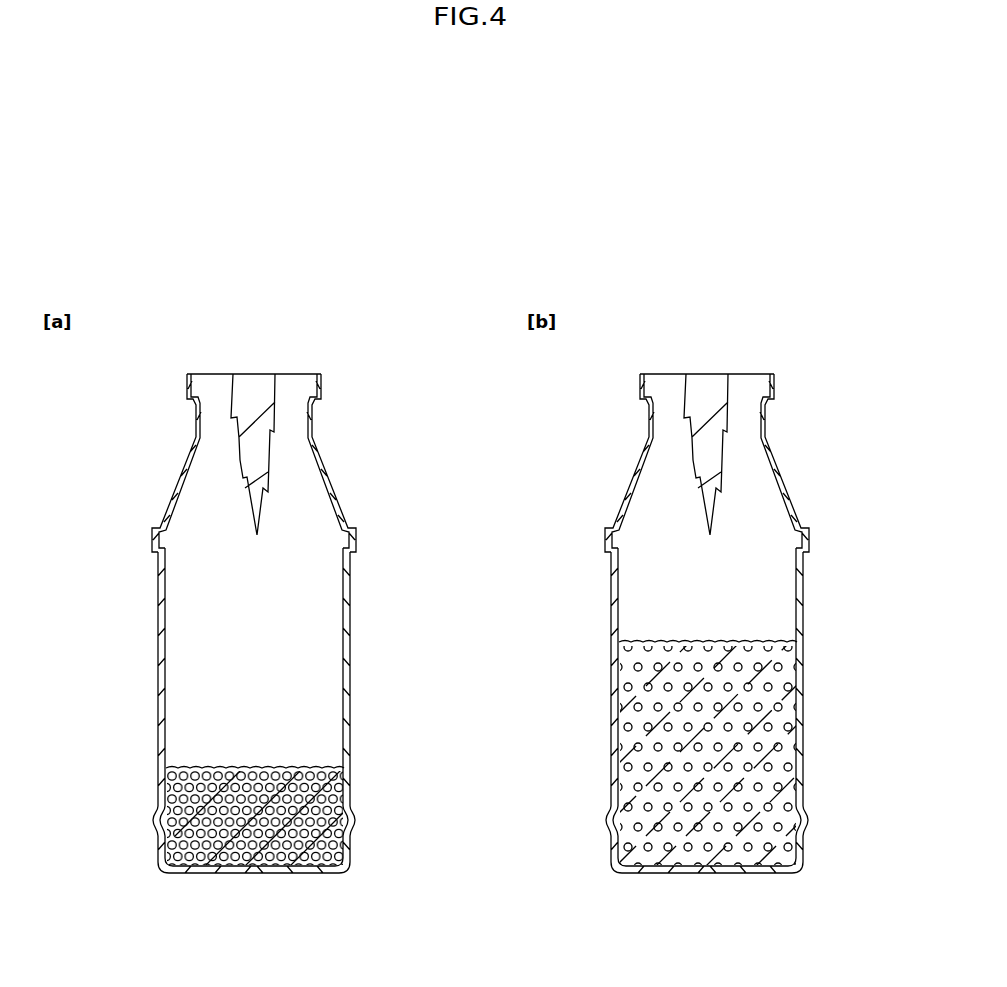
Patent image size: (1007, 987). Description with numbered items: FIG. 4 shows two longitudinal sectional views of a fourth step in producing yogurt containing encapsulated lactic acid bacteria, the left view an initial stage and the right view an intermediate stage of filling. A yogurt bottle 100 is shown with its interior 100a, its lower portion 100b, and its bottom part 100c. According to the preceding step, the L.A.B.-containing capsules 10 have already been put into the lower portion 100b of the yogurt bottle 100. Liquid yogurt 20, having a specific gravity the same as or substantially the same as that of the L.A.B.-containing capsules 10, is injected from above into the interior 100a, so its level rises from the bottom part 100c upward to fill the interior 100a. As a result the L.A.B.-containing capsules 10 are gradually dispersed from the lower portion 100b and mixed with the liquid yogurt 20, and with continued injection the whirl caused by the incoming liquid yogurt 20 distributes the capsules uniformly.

The L.A.B.-containing capsules 10 is at (172, 788).
The liquid yogurt 20 is at (253, 443).
The yogurt bottle 100 is at (353, 571).
The interior 100a is at (322, 614).
The lower portion 100b is at (362, 815).
The bottom part 100c is at (257, 875).